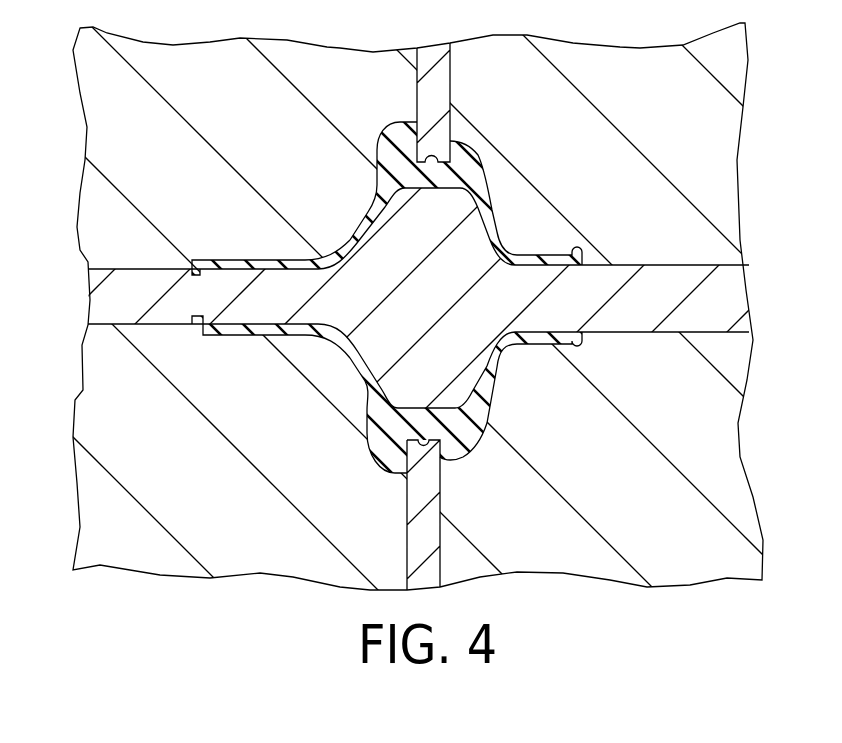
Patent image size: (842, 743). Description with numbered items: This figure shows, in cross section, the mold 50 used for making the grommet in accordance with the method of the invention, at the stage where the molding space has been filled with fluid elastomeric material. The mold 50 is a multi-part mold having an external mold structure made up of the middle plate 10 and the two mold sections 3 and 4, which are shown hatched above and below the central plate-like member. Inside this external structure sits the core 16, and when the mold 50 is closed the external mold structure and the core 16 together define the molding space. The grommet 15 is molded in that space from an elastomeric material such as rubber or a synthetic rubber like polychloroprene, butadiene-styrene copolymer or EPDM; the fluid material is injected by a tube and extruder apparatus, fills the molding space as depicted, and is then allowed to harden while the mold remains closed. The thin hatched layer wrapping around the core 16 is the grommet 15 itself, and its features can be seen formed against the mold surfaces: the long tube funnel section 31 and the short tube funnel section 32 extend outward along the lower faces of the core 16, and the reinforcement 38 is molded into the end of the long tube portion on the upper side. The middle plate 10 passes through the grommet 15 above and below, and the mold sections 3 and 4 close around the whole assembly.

The mold section 3 is at (654, 493).
The mold section 4 is at (274, 129).
The middle plate 10 is at (453, 73).
The grommet 15 is at (468, 162).
The core 16 is at (432, 303).
The long tube funnel section 31 is at (300, 337).
The short tube funnel section 32 is at (538, 340).
The reinforcement 38 is at (191, 266).
The mold 50 is at (636, 113).